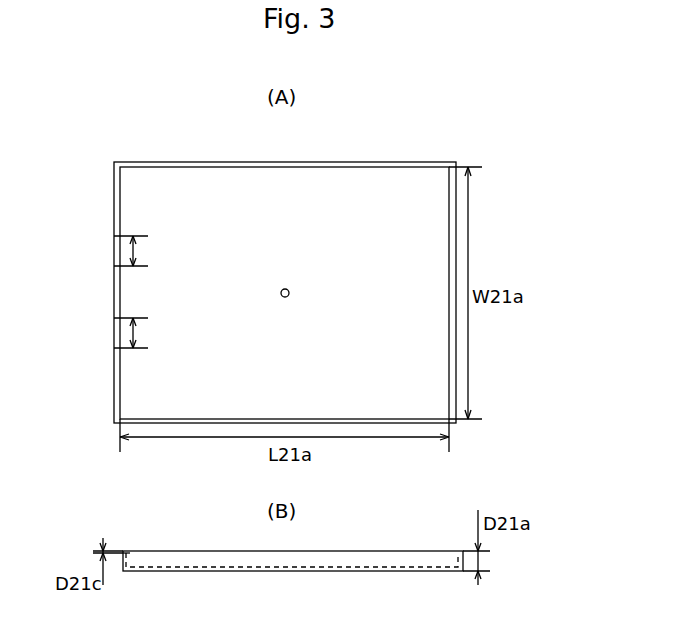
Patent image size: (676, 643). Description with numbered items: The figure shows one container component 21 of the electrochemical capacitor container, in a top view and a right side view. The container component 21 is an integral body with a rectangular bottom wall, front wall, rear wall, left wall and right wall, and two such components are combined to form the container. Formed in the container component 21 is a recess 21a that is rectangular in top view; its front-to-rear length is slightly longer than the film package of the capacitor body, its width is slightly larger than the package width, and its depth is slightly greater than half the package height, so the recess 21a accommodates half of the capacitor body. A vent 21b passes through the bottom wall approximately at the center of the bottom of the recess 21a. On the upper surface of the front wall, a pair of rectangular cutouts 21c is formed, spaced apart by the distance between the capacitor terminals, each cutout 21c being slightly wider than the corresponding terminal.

The container component 21 is at (165, 162).
The recess 21a is at (382, 200).
The vent 21b is at (286, 288).
The cutouts 21c is at (120, 249).